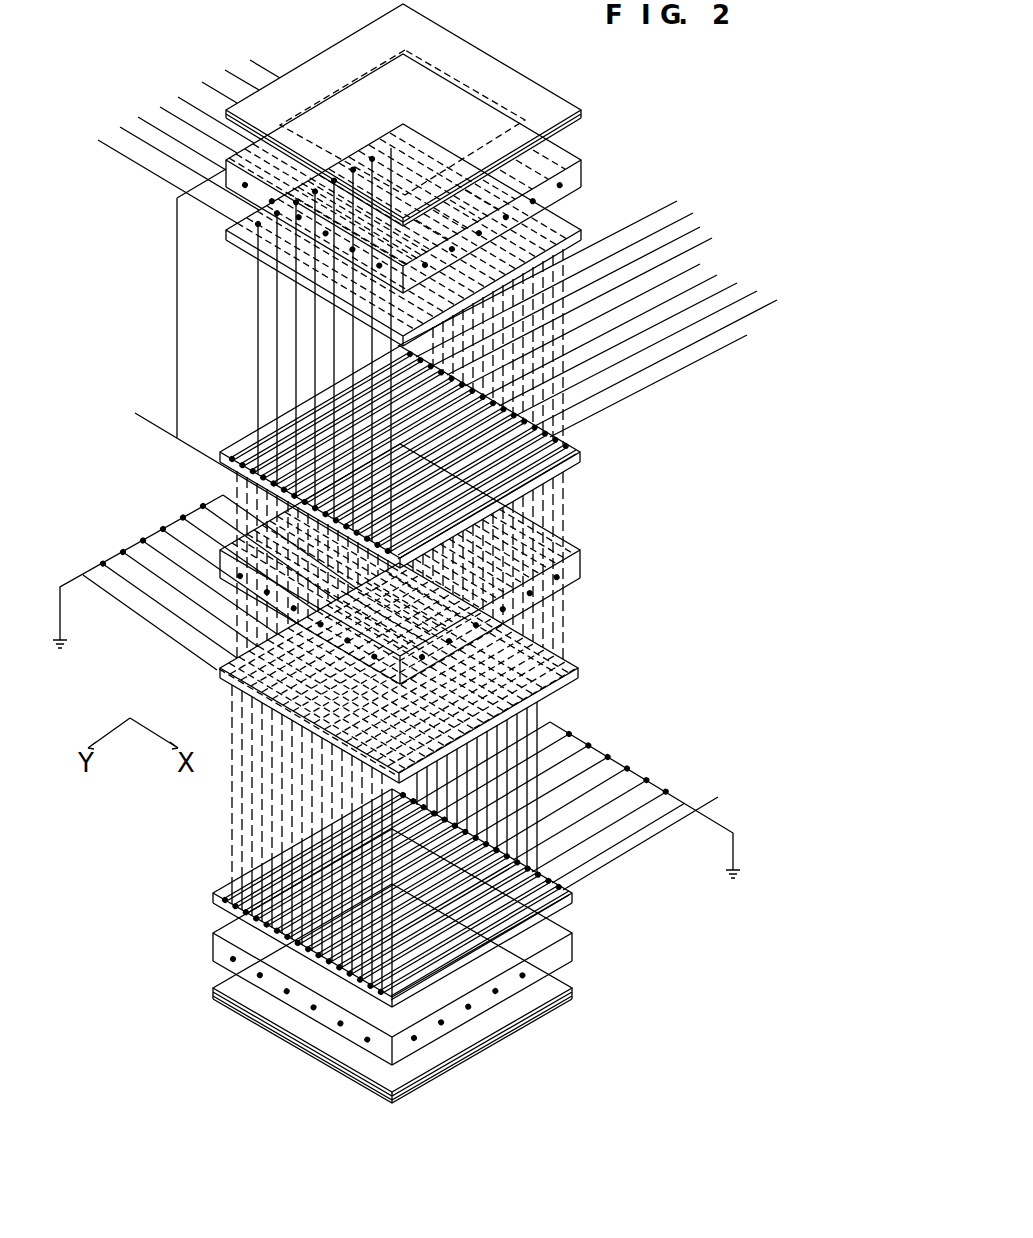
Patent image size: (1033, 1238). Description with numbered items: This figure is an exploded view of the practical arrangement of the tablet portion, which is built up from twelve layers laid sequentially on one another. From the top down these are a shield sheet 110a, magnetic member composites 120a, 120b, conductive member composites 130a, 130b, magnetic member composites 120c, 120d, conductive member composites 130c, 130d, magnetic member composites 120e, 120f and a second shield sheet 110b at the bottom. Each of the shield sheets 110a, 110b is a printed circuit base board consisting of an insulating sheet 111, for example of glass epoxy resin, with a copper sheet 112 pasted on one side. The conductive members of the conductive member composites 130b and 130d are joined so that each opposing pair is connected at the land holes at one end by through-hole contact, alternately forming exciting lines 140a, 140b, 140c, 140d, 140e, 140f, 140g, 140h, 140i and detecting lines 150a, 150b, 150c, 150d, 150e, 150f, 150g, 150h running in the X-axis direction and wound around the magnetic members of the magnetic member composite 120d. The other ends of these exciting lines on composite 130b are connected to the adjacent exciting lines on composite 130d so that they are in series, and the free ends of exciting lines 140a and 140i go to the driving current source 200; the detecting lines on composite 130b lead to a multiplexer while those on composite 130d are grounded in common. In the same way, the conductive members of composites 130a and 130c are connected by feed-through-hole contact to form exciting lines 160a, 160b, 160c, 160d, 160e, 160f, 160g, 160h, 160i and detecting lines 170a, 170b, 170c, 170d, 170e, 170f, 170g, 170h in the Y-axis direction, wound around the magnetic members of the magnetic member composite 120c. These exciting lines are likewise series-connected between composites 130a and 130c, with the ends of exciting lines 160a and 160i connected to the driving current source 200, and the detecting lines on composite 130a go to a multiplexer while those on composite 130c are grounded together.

The shield sheet 110a is at (503, 73).
The shield sheet 110b is at (574, 990).
The insulating sheet 111 is at (583, 112).
The copper sheet 112 is at (549, 94).
The magnetic member composite 120a is at (568, 160).
The magnetic member composite 120b is at (576, 178).
The magnetic member composite 120c is at (580, 556).
The magnetic member composite 120d is at (580, 572).
The magnetic member composite 120e is at (574, 945).
The magnetic member composite 120f is at (574, 955).
The conductive member composite 130a is at (582, 231).
The conductive member composite 130b is at (582, 456).
The conductive member composite 130c is at (222, 668).
The conductive member composite 130d is at (574, 895).
The exciting line 140a is at (293, 853).
The exciting line 140b is at (310, 870).
The exciting line 140c is at (290, 882).
The exciting line 140d is at (228, 893).
The exciting line 140e is at (317, 933).
The exciting line 140f is at (360, 995).
The exciting line 140g is at (300, 990).
The exciting line 140h is at (330, 1025).
The exciting line 140i is at (690, 814).
The detecting line 150a is at (632, 244).
The detecting line 150b is at (712, 238).
The detecting line 150c is at (670, 262).
The detecting line 150d is at (693, 280).
The detecting line 150e is at (710, 292).
The detecting line 150f is at (703, 318).
The detecting line 150g is at (687, 350).
The detecting line 150h is at (663, 388).
The exciting line 160a is at (150, 424).
The exciting line 160b is at (514, 705).
The exciting line 160c is at (494, 717).
The exciting line 160d is at (475, 728).
The exciting line 160e is at (455, 740).
The exciting line 160f is at (436, 751).
The exciting line 160g is at (416, 763).
The exciting line 160h is at (217, 678).
The exciting line 160i is at (177, 295).
The detecting line 170a is at (250, 60).
The detecting line 170b is at (225, 70).
The detecting line 170c is at (202, 82).
The detecting line 170d is at (178, 97).
The detecting line 170e is at (160, 107).
The detecting line 170f is at (138, 117).
The detecting line 170g is at (120, 127).
The detecting line 170h is at (98, 140).
The driving current source 200 is at (414, 510).